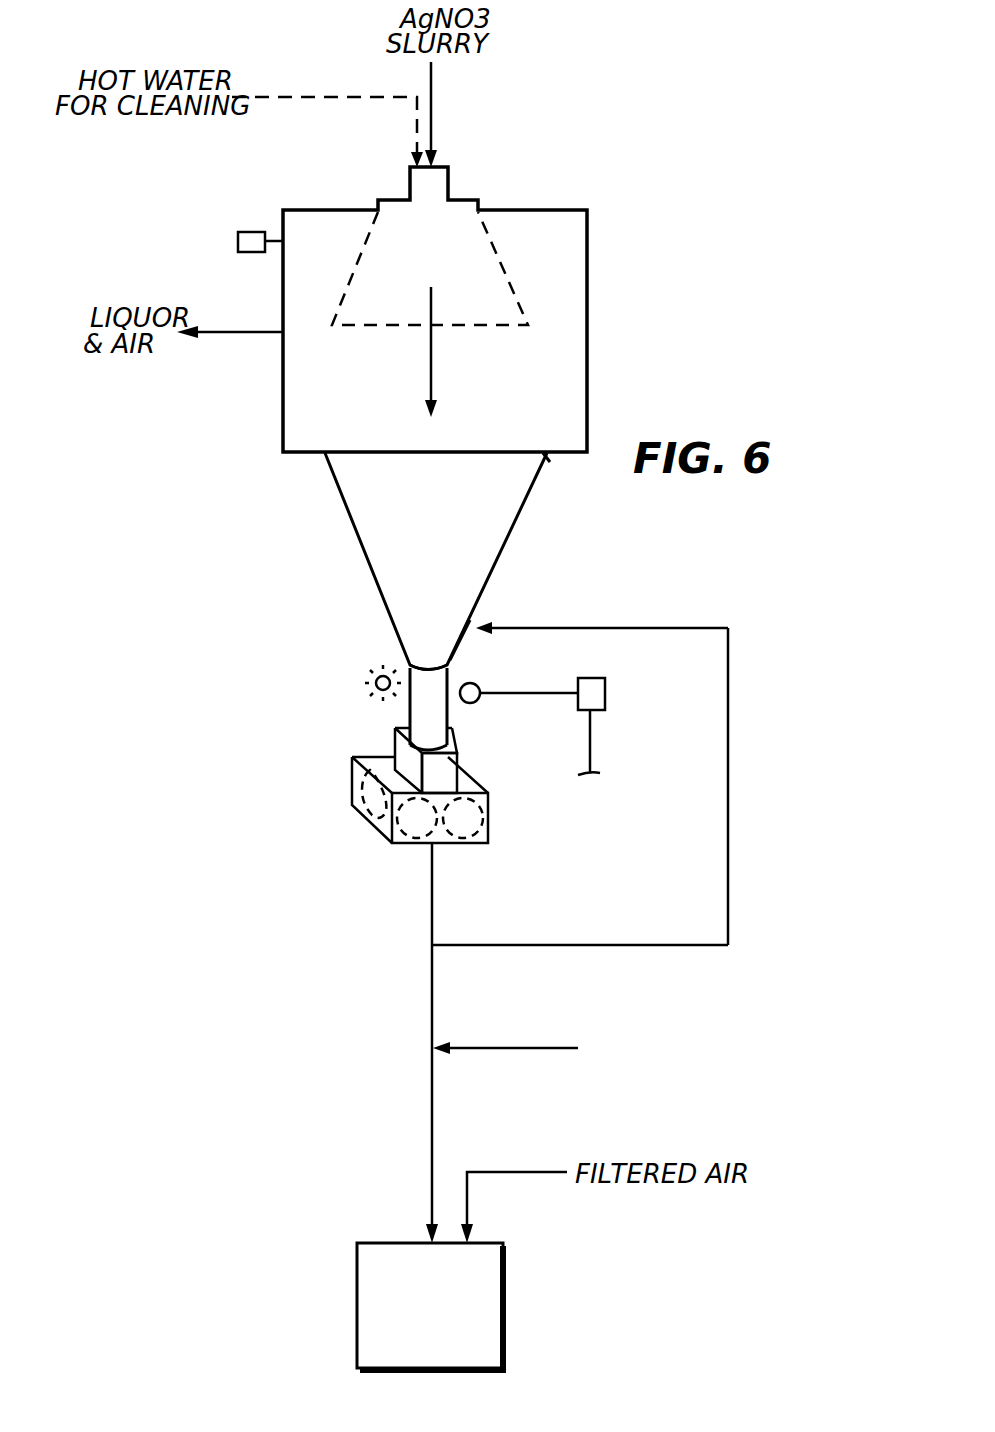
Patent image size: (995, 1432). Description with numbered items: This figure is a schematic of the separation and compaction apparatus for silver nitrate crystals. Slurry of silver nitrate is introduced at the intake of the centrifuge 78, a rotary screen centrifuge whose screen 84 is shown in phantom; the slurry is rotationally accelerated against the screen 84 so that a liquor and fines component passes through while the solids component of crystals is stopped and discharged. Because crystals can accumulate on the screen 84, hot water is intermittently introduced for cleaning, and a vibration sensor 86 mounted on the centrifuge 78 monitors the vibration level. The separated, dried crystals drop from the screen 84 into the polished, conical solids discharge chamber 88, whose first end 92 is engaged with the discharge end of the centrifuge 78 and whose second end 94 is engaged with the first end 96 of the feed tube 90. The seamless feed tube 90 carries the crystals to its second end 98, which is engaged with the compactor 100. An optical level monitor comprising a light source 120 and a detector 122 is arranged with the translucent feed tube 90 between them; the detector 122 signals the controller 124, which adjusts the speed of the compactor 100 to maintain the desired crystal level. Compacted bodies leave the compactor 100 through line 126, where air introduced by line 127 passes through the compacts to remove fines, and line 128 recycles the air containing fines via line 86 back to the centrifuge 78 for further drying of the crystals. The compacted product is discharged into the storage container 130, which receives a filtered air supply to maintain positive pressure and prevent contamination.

The centrifuge 78 is at (553, 210).
The screen 84 is at (508, 273).
The line 86 is at (251, 230).
The solids discharge chamber 88 is at (513, 535).
The feed tube 90 is at (410, 712).
The first end 92 is at (548, 456).
The second end 94 is at (455, 656).
The first end 96 is at (410, 666).
The second end 98 is at (457, 748).
The compactor 100 is at (485, 787).
The light source 120 is at (368, 686).
The detector 122 is at (480, 701).
The controller 124 is at (606, 688).
The line 126 is at (436, 890).
The line 127 is at (482, 1047).
The line 128 is at (640, 948).
The storage container 130 is at (507, 1260).